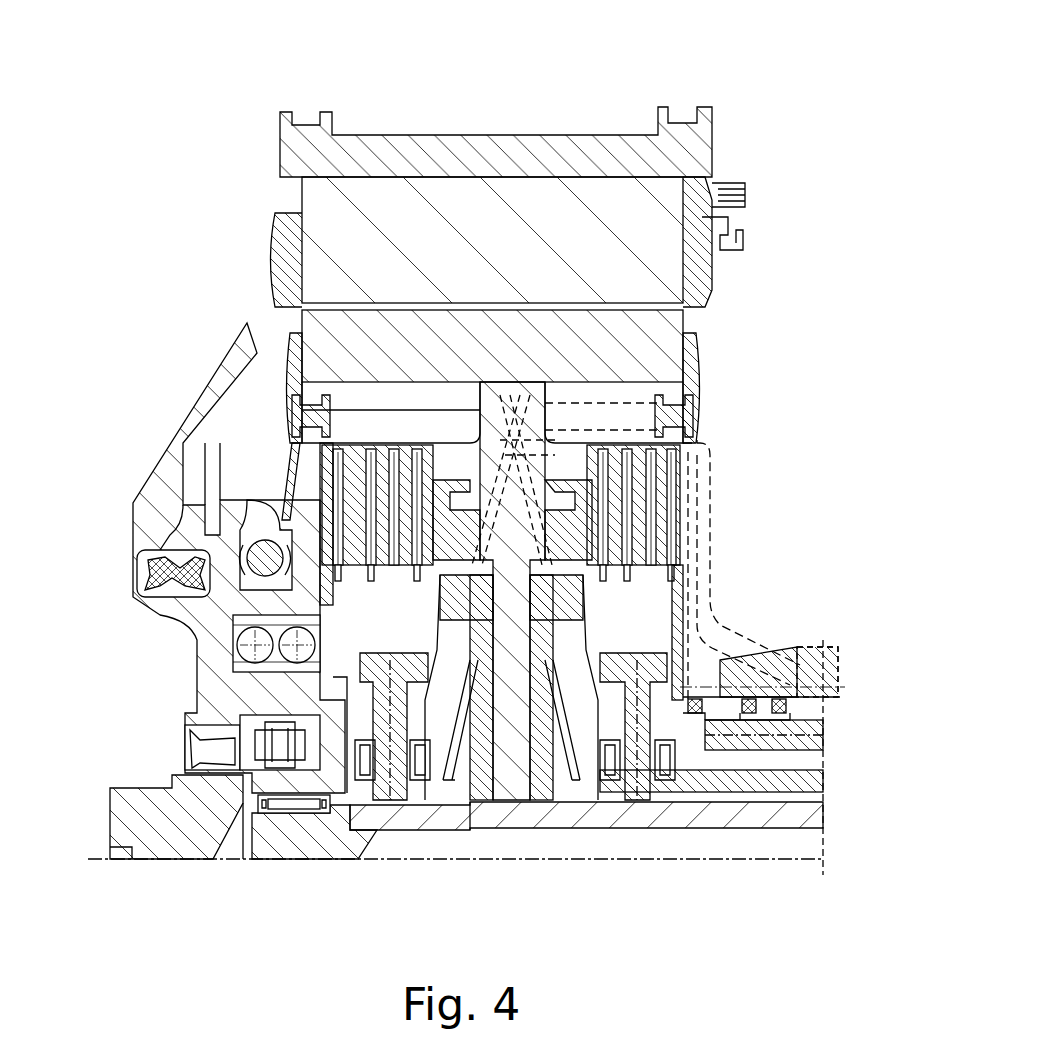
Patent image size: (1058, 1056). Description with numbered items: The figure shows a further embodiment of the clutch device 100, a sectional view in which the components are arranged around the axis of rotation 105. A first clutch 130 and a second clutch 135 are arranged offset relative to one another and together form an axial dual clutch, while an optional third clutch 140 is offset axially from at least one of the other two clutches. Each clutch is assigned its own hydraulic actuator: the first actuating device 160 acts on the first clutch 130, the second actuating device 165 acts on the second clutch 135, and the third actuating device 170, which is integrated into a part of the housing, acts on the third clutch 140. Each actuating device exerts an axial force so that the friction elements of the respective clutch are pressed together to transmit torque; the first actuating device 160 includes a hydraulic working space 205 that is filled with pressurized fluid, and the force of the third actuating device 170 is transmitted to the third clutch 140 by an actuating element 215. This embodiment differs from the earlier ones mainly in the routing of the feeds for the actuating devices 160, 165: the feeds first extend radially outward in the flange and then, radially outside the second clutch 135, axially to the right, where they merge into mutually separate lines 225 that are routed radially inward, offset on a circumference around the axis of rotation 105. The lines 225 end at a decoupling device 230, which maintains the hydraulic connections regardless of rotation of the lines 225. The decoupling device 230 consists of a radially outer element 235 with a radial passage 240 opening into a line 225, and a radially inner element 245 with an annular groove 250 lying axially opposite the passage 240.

The clutch device 100 is at (222, 82).
The axis of rotation 105 is at (818, 868).
The first clutch 130 is at (402, 882).
The second clutch 135 is at (657, 882).
The third clutch 140 is at (312, 882).
The first actuating device 160 is at (463, 473).
The second actuating device 165 is at (565, 475).
The third actuating device 170 is at (127, 577).
The hydraulic working space 205 is at (497, 513).
The actuating element 215 is at (263, 517).
The lines 225 is at (702, 458).
The decoupling device 230 is at (852, 648).
The radially outer element 235 is at (828, 693).
The radial passage 240 is at (838, 690).
The radially inner element 245 is at (826, 723).
The annular groove 250 is at (826, 705).